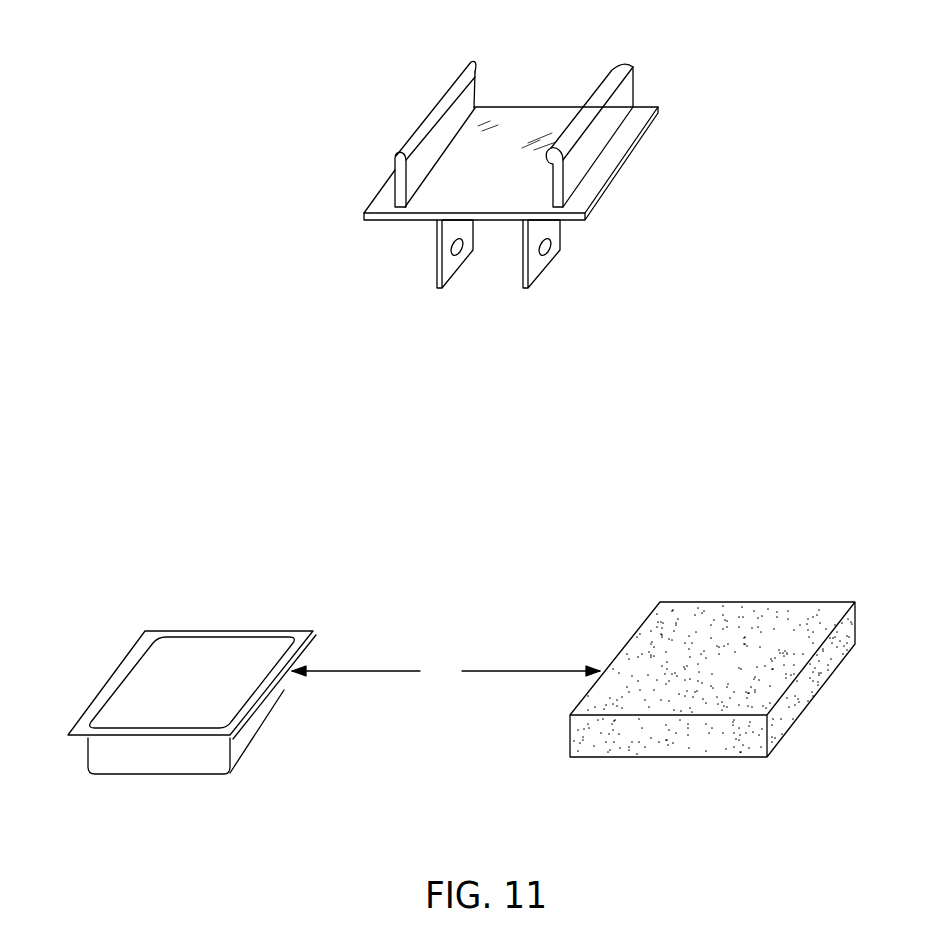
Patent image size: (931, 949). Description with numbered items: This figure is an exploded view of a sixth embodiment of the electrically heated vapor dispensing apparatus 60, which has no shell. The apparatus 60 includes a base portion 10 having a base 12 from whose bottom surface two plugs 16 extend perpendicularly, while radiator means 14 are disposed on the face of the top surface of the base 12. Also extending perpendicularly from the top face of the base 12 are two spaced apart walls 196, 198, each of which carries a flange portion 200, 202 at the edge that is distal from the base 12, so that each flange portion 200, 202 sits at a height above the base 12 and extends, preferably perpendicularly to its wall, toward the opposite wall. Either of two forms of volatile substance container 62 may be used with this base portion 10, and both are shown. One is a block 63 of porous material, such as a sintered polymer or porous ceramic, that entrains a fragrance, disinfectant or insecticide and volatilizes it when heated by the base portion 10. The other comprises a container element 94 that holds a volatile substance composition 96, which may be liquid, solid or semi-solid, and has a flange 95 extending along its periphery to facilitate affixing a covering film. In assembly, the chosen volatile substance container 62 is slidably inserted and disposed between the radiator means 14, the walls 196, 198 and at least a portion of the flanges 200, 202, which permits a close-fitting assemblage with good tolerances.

The electrically heated vapor dispensing apparatus 60 is at (726, 38).
The base portion 10 is at (718, 174).
The base 12 is at (586, 216).
The radiator means 14 is at (539, 123).
The plugs 16 is at (542, 279).
The wall 196 is at (632, 99).
The wall 198 is at (467, 107).
The flange portion 200 is at (618, 73).
The flange portion 202 is at (472, 60).
The volatile substance container 62 is at (446, 672).
The block 63 is at (607, 751).
The container element 94 is at (163, 760).
The flange 95 is at (102, 696).
The volatile substance composition 96 is at (147, 668).